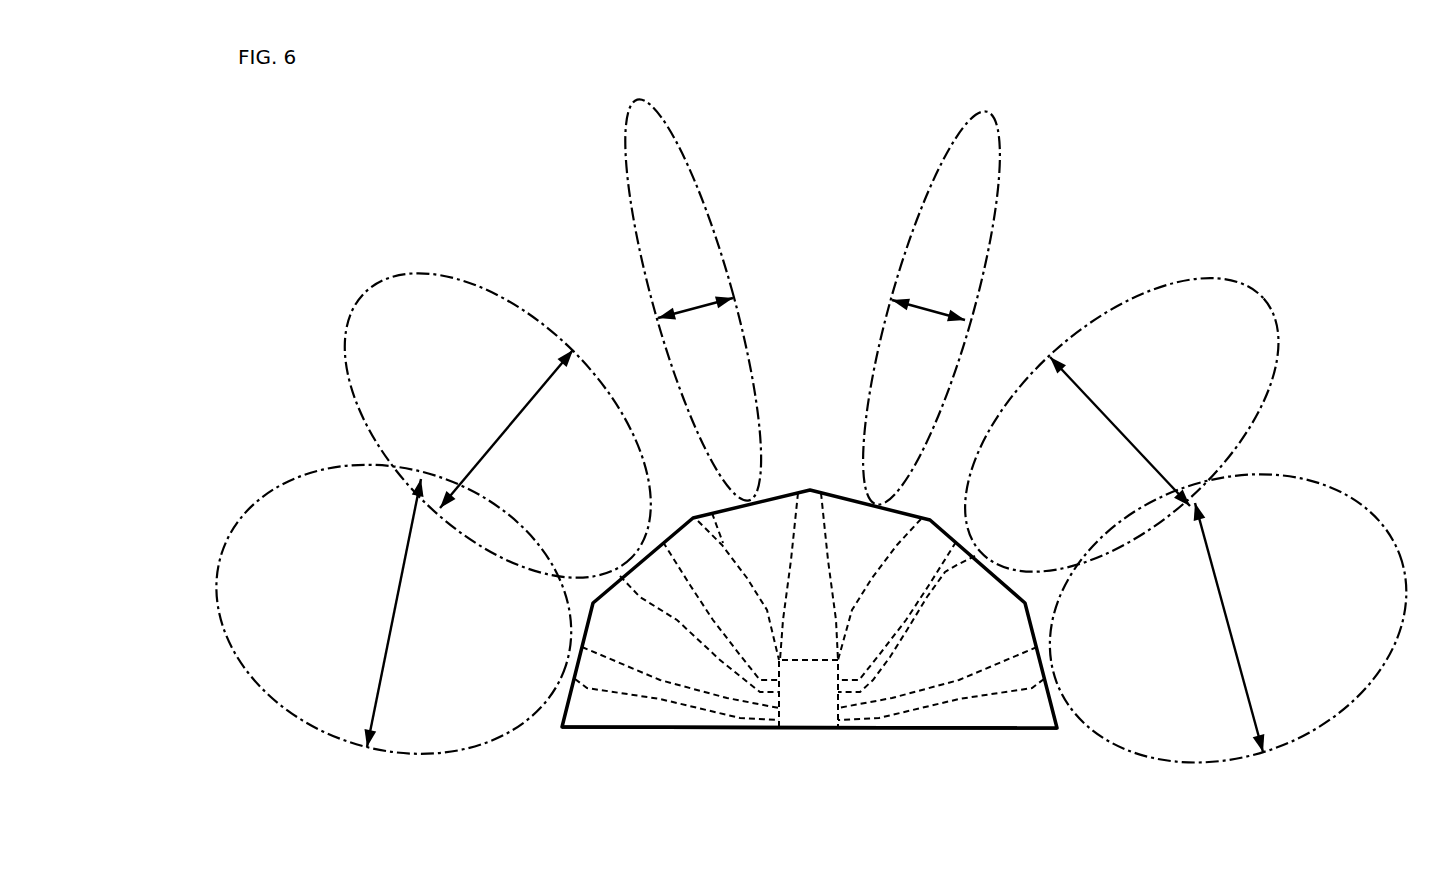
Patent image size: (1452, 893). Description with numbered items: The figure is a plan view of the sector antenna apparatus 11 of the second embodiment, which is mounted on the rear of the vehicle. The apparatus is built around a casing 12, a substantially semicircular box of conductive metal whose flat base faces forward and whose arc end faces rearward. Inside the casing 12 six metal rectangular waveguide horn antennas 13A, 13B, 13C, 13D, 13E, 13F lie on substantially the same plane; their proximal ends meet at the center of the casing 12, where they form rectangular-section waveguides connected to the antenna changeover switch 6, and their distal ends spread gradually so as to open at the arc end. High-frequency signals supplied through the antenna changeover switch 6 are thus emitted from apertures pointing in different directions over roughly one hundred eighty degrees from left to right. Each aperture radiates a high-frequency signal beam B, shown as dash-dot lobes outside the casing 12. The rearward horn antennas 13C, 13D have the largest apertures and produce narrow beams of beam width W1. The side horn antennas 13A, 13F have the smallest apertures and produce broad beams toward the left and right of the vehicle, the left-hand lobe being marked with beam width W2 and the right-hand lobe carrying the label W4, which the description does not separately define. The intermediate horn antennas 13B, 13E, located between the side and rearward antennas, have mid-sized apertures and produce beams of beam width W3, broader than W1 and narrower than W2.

The antenna changeover switch 6 is at (807, 708).
The sector antenna apparatus 11 is at (638, 732).
The casing 12 is at (948, 713).
The horn antenna 13A is at (575, 679).
The horn antenna 13B is at (620, 576).
The horn antenna 13C is at (712, 513).
The horn antenna 13D is at (826, 490).
The horn antenna 13E is at (975, 556).
The horn antenna 13F is at (1044, 679).
The high-frequency signal beam B is at (282, 483).
The beam width W1 is at (811, 298).
The beam width W2 is at (384, 613).
The beam width W3 is at (815, 429).
The beam width W4 is at (1238, 627).